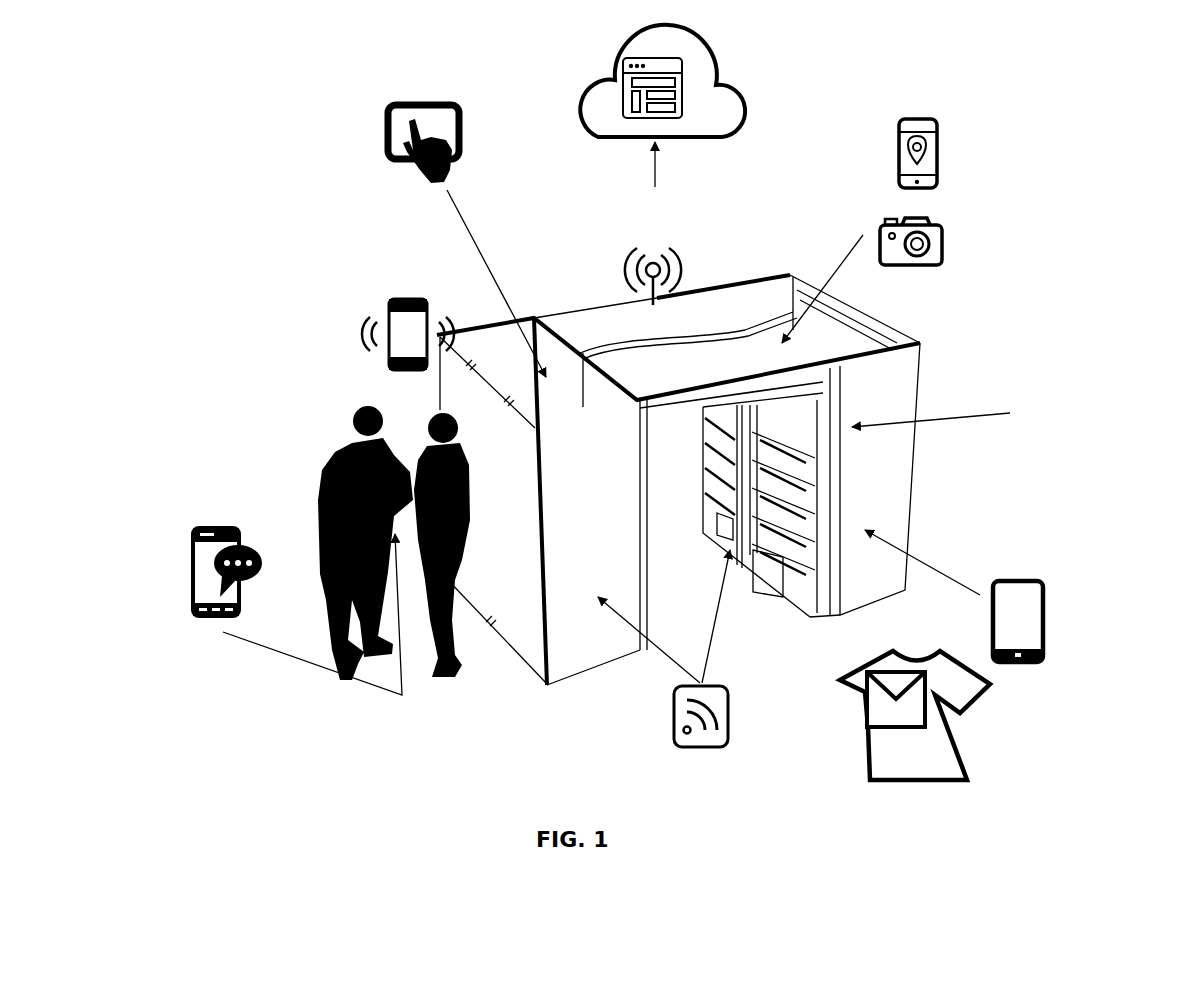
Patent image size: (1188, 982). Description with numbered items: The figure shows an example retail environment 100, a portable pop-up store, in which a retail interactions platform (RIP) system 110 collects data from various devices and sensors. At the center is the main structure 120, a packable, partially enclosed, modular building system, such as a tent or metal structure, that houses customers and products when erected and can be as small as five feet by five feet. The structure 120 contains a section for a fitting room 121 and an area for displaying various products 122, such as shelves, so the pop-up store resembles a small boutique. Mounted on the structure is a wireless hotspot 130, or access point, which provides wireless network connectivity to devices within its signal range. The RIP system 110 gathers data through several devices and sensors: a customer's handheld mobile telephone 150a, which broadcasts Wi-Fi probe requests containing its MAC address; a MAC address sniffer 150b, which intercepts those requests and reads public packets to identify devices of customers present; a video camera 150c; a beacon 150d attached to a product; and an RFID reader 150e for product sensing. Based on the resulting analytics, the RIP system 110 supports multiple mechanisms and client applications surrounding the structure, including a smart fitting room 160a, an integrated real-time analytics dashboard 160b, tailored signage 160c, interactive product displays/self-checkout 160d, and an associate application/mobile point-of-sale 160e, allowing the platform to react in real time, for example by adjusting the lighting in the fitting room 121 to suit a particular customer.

The retail environment 100 is at (248, 111).
The retail interactions platform (RIP) system 110 is at (1064, 83).
The main structure 120 is at (698, 374).
The fitting room 121 is at (596, 489).
The area for displaying products 122 is at (804, 435).
The Wi-Fi/4G hotspot 130 is at (655, 312).
The handheld mobile telephone 150a is at (388, 303).
The MAC address sniffer 150b is at (897, 130).
The video camera 150c is at (933, 265).
The beacon 150d is at (978, 695).
The RFID reader 150e is at (728, 718).
The smart fitting room 160a is at (463, 143).
The integrated real-time analytics dashboard 160b is at (740, 126).
The tailored signage 160c is at (840, 413).
The interactive product displays/self-checkout 160d is at (1045, 653).
The associate application/mobile point-of-sale (POS) 160e is at (240, 590).